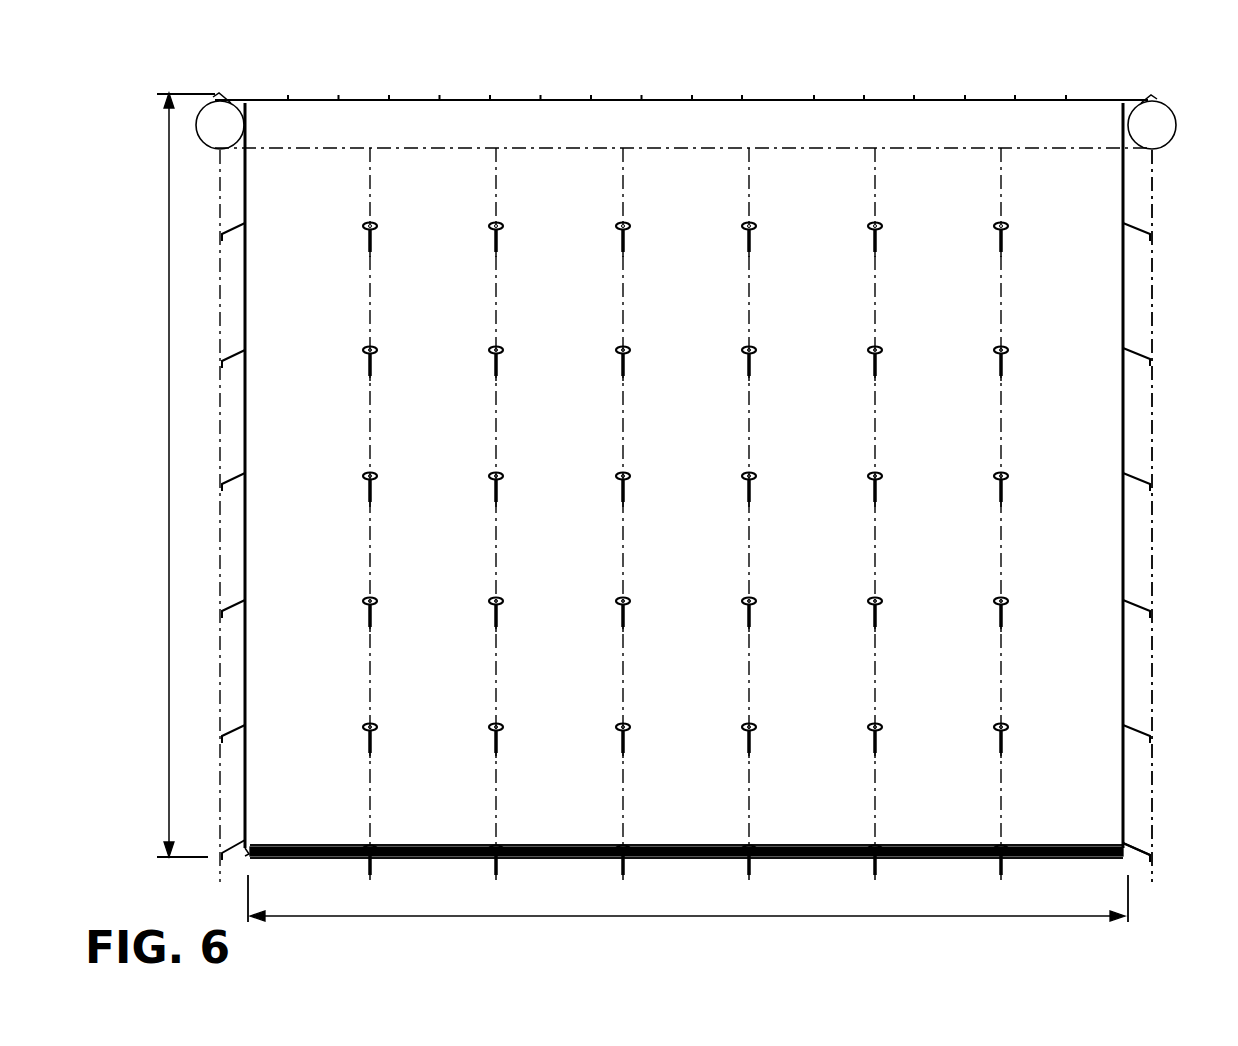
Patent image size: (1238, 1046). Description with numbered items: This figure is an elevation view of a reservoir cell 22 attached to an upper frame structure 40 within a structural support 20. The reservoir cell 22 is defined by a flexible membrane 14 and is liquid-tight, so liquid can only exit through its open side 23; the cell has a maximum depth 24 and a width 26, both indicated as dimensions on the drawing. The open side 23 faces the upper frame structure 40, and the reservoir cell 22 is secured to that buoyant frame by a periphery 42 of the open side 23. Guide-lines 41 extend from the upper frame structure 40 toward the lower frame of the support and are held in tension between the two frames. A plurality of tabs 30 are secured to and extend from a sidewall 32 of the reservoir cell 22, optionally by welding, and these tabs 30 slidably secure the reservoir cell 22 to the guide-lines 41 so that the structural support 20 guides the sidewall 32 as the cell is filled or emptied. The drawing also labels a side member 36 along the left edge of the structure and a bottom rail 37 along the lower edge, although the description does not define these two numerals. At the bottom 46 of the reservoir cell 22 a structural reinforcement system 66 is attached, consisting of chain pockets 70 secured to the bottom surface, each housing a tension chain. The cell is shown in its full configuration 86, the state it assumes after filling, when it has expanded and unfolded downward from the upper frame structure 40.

The flexible membrane 14 is at (1075, 312).
The structural support 20 is at (135, 528).
The reservoir cell 22 is at (1085, 432).
The open side 23 is at (667, 70).
The maximum depth 24 is at (169, 308).
The width 26 is at (743, 916).
The tabs 30 is at (628, 348).
The sidewall 32 is at (824, 279).
The left side member 36 is at (247, 383).
The bottom rail 37 is at (405, 845).
The upper frame structure 40 is at (277, 128).
The guide-lines 41 is at (495, 172).
The periphery 42 is at (1148, 98).
The bottom 46 is at (715, 849).
The structural reinforcement system 66 is at (1166, 855).
The chain pockets 70 is at (792, 858).
The full configuration 86 is at (1182, 529).